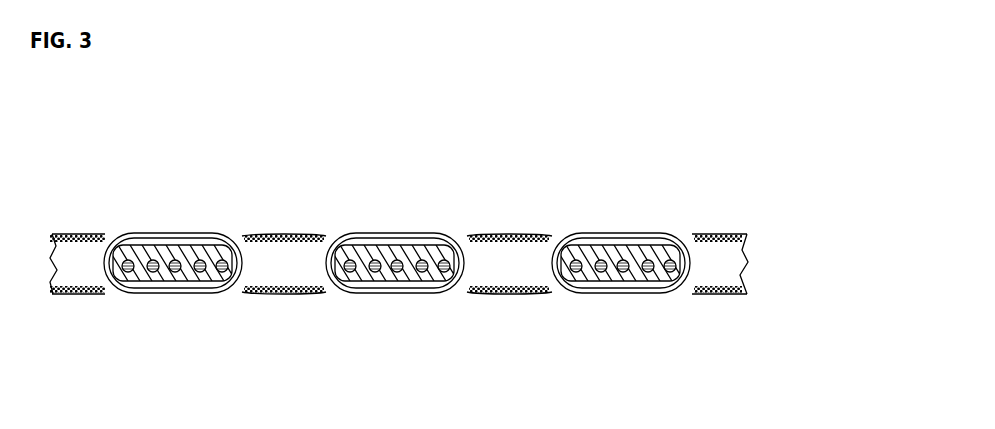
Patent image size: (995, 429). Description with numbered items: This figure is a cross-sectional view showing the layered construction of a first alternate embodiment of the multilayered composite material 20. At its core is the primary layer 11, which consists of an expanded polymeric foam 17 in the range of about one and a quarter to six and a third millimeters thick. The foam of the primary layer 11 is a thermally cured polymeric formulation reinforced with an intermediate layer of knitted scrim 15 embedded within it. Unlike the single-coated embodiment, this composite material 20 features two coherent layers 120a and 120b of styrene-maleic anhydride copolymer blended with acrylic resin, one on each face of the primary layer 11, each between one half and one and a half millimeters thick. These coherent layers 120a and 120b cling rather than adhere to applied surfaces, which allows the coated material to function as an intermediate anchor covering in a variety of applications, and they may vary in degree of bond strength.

The composite material 20 is at (619, 128).
The primary layer 11 is at (498, 272).
The knitted scrim 15 is at (407, 275).
The expanded polymeric foam 17 is at (127, 277).
The coherent layer 120a is at (312, 232).
The coherent layer 120b is at (193, 292).